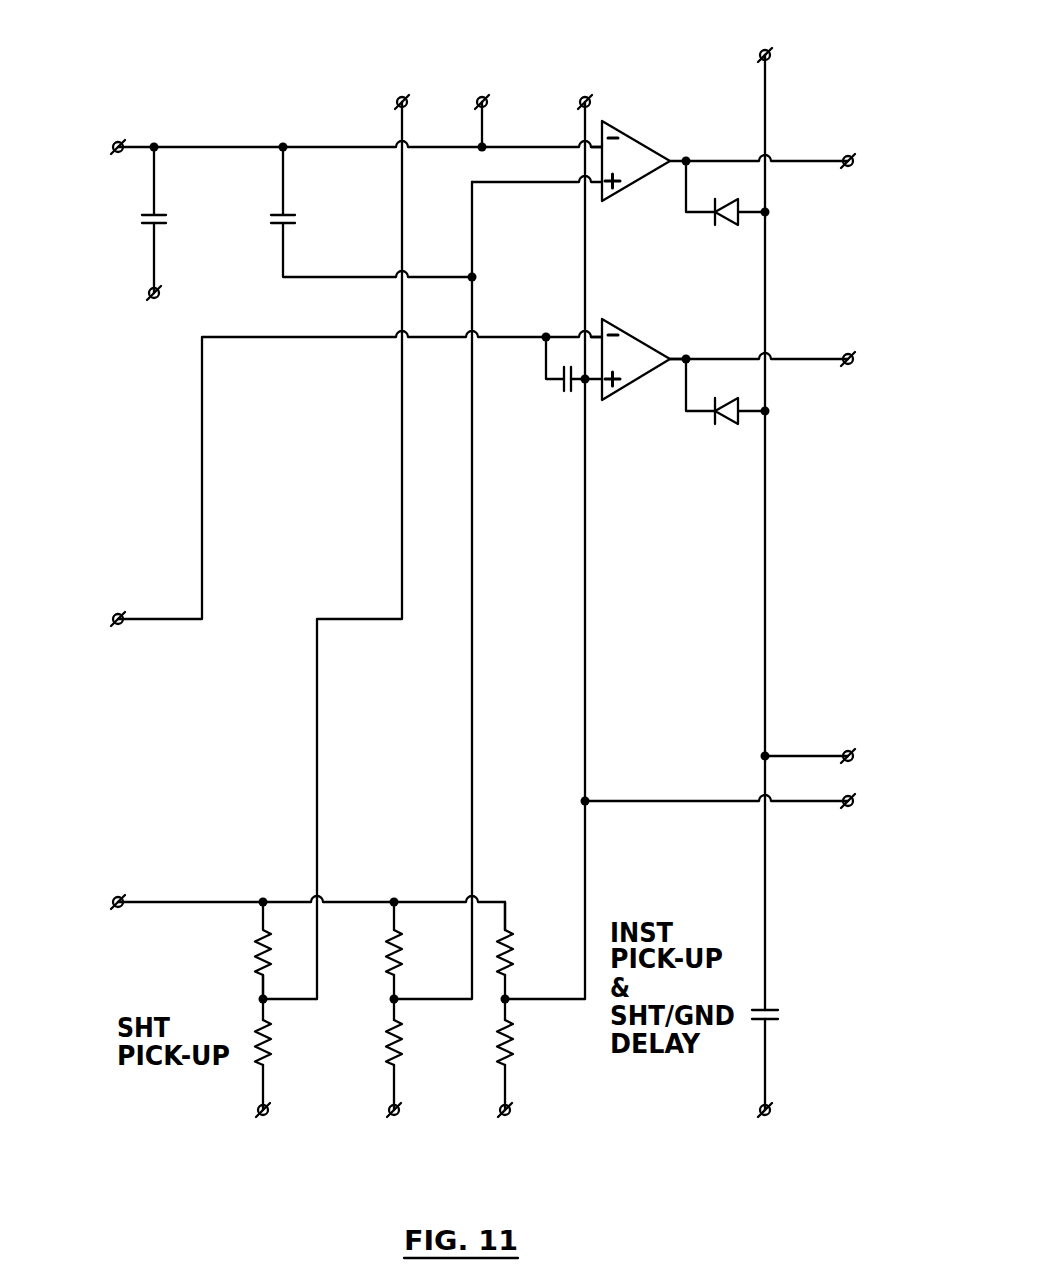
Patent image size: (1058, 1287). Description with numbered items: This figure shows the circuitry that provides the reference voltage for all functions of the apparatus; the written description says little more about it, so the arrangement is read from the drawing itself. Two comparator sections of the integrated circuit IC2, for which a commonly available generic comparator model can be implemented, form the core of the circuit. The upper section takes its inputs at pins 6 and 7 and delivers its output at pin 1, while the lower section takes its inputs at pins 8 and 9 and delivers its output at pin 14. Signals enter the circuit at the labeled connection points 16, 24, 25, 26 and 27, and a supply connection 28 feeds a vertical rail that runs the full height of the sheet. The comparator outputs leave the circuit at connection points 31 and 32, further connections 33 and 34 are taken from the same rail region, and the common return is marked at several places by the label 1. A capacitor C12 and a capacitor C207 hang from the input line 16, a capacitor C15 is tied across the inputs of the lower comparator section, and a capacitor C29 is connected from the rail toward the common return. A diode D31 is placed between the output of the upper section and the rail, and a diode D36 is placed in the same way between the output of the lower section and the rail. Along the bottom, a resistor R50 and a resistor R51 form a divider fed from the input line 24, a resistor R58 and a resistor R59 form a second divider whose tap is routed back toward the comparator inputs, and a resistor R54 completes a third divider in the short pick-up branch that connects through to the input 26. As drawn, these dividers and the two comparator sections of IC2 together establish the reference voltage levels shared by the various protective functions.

The input terminal 16 is at (337, 113).
The terminal 26 is at (368, 531).
The terminal 27 is at (586, 531).
The terminal 28 is at (762, 514).
The output terminal 31 is at (779, 161).
The output terminal 32 is at (779, 358).
The terminal 33 is at (825, 756).
The terminal 34 is at (735, 801).
The input terminal 25 is at (337, 482).
The input terminal 24 is at (288, 909).
The common/ground terminal 1 is at (459, 638).
The comparator inverting input pin 6 is at (582, 130).
The comparator non-inverting input pin 7 is at (537, 195).
The comparator inverting input pin 8 is at (597, 314).
The comparator non-inverting input pin 9 is at (588, 401).
The comparator output pin 14 is at (672, 341).
The integrated circuit IC2 is at (636, 260).
The capacitor C12 0.01uF C12 is at (193, 201).
The capacitor C207 1uF C207 is at (371, 212).
The capacitor C15 0.1uF C15 is at (536, 393).
The capacitor C29 0.01uF C29 is at (804, 1027).
The diode D31 is at (728, 211).
The diode D36 is at (728, 406).
The resistor R50 90.9K R50 is at (425, 951).
The resistor R51 100K R51 is at (425, 1045).
The resistor R54 100K R54 is at (293, 1048).
The resistor R58 30.1K R58 is at (537, 952).
The resistor R59 100K R59 is at (537, 1043).